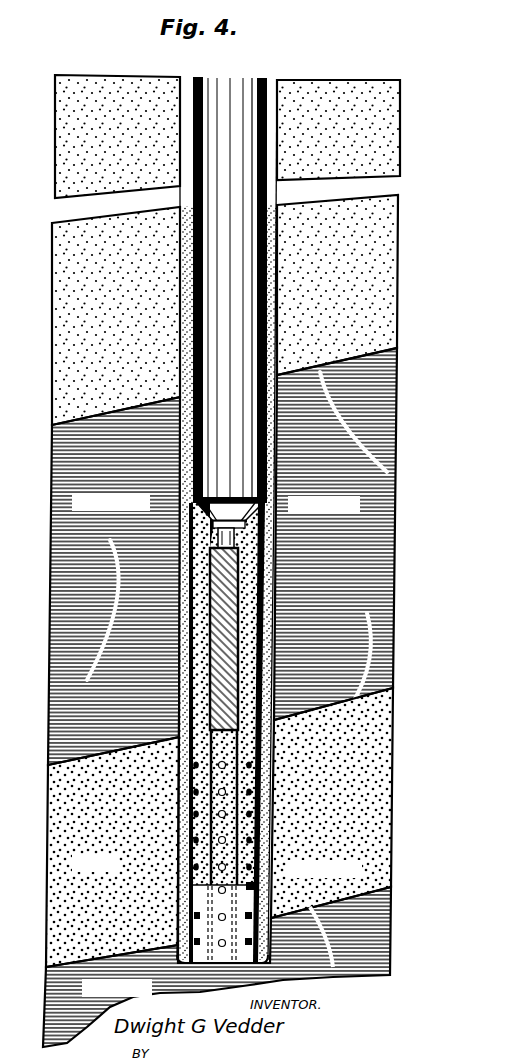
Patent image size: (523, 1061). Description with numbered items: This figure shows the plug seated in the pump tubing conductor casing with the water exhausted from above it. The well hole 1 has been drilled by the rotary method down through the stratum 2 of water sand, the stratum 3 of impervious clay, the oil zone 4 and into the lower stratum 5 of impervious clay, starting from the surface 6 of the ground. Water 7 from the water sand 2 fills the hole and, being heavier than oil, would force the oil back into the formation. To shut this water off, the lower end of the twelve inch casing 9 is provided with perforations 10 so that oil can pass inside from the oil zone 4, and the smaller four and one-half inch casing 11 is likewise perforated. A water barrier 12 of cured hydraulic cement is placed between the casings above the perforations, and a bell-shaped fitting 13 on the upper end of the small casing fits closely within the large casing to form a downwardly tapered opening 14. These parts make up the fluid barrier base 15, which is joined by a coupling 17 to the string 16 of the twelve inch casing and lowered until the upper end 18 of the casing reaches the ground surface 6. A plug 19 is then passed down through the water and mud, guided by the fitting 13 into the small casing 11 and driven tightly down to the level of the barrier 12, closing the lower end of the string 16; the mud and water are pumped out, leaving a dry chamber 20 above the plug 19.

The well hole 1 is at (272, 86).
The stratum of water sand 2 is at (2, 117).
The stratum of impervious clay 3 is at (60, 487).
The oil zone 4 is at (52, 831).
The stratum of impervious clay 5 is at (42, 1006).
The surface of the ground 6 is at (120, 77).
The water 7 is at (275, 206).
The 12 inch casing 9 is at (178, 623).
The perforations 10 is at (285, 712).
The 4½ inch casing 11 is at (176, 738).
The water barrier 12 is at (273, 676).
The bell-shaped fitting 13 is at (270, 526).
The downwardly tapered opening 14 is at (185, 524).
The fluid barrier base 15 is at (282, 601).
The string of the 12 inch casing 16 is at (272, 470).
The coupling 17 is at (270, 496).
The upper end of the 12 inch casing 18 is at (224, 276).
The plug 19 is at (230, 657).
The dry chamber 20 is at (252, 452).